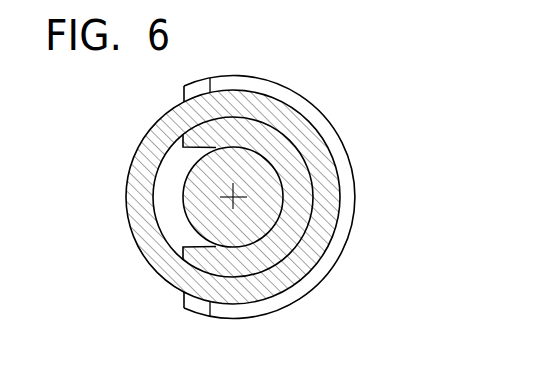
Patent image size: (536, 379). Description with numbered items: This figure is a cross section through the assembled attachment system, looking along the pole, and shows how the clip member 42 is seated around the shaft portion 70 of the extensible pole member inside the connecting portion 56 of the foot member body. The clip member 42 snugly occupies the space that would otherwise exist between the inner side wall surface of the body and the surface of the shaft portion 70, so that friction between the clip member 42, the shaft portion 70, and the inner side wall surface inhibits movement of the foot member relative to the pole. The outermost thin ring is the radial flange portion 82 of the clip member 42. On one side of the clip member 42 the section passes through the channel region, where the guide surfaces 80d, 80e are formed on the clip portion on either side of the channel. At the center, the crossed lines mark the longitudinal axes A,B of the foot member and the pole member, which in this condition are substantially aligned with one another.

The radial flange portion 82 is at (248, 82).
The connecting portion 56 is at (287, 117).
The shaft portion 70 is at (220, 192).
The clip member 42 is at (300, 190).
The guide surface 80d is at (192, 147).
The guide surface 80e is at (192, 244).
The longitudinal axes A,B is at (236, 200).